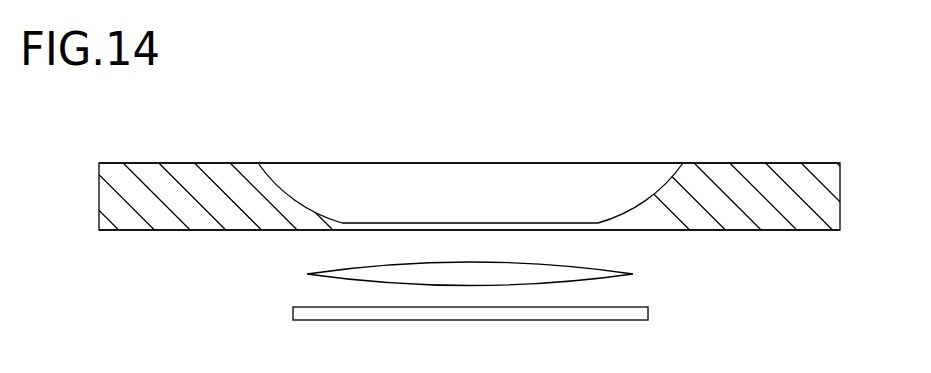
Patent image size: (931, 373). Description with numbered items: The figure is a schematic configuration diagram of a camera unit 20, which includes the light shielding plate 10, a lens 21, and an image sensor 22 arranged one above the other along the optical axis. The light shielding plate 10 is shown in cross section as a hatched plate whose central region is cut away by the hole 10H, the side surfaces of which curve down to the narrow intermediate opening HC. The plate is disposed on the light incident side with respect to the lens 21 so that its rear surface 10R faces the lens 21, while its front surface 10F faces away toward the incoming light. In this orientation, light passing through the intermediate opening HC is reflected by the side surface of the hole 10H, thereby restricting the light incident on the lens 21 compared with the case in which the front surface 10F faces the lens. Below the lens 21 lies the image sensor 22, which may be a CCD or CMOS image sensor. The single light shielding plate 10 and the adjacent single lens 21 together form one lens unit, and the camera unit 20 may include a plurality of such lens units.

The camera unit 20 is at (812, 113).
The light shielding plate 10 is at (840, 215).
The front surface 10F is at (221, 163).
The rear surface 10R is at (235, 230).
The hole 10H is at (290, 198).
The intermediate opening HC is at (598, 223).
The lens 21 is at (612, 266).
The image sensor 22 is at (322, 320).